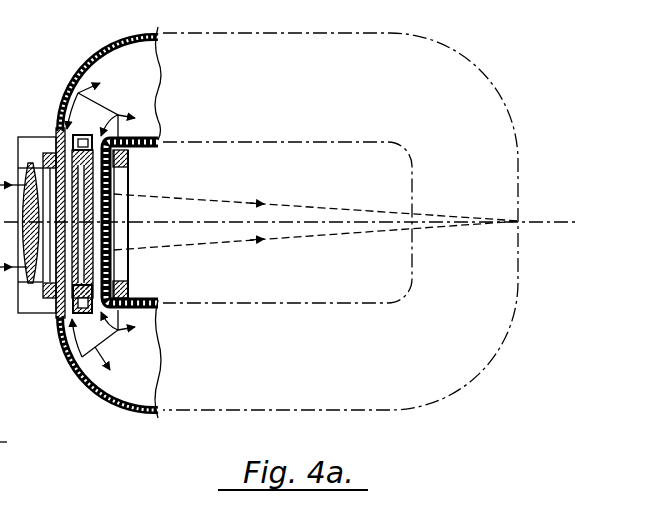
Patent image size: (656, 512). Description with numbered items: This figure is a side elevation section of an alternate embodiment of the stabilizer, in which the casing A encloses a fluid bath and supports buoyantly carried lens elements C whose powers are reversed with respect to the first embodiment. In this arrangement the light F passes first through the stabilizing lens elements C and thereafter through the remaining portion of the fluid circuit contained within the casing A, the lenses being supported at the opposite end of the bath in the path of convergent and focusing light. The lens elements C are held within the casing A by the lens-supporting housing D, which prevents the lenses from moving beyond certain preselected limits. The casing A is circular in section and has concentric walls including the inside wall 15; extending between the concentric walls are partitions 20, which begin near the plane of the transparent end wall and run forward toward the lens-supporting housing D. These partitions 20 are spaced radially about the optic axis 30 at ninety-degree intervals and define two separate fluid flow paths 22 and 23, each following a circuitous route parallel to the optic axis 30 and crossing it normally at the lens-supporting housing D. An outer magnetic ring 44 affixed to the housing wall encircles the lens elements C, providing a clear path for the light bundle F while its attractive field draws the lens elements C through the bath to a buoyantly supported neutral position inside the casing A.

The inside wall 15 is at (132, 222).
The partitions 20 is at (161, 84).
The fluid flow path 22 is at (104, 340).
The fluid flow path 23 is at (101, 110).
The optic axis 30 is at (291, 222).
The outer magnetic ring 44 is at (136, 284).
The casing A is at (112, 38).
The lens-supporting housing D is at (53, 118).
The lens elements C is at (86, 238).
The light F is at (13, 226).